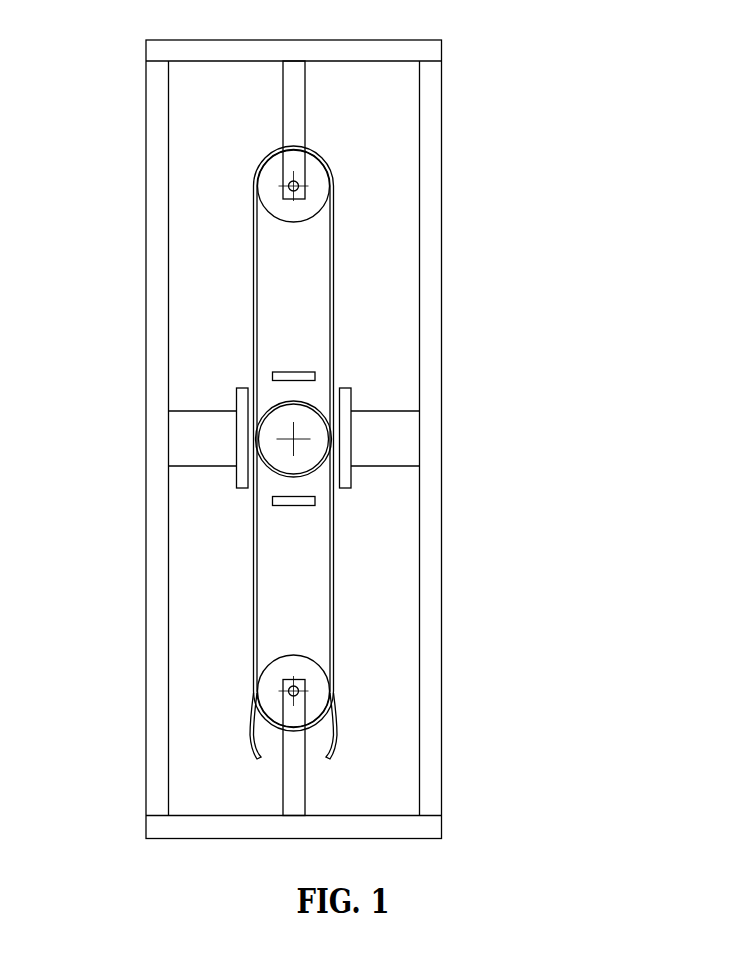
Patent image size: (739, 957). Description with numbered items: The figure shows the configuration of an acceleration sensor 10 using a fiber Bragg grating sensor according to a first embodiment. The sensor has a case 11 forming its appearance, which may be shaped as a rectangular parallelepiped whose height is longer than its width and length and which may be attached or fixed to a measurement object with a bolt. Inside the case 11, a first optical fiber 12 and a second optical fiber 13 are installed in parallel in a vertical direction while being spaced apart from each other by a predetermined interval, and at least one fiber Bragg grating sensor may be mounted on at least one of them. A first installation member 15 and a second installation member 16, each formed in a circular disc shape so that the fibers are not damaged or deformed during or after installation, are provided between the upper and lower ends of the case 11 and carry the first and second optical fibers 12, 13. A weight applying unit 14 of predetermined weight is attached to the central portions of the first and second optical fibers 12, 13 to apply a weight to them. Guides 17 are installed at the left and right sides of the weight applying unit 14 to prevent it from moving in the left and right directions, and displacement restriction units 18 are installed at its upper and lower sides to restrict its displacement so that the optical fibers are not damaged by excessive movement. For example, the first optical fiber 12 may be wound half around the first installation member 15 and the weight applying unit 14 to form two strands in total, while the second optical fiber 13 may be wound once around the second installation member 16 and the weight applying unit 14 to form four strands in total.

The acceleration sensor 10 is at (612, 32).
The case 11 is at (442, 274).
The first optical fiber 12 is at (254, 359).
The second optical fiber 13 is at (254, 587).
The weight applying unit 14 is at (308, 463).
The first installation member 15 is at (315, 179).
The second installation member 16 is at (315, 673).
The guides 17 is at (183, 438).
The displacement restriction units 18 is at (294, 372).